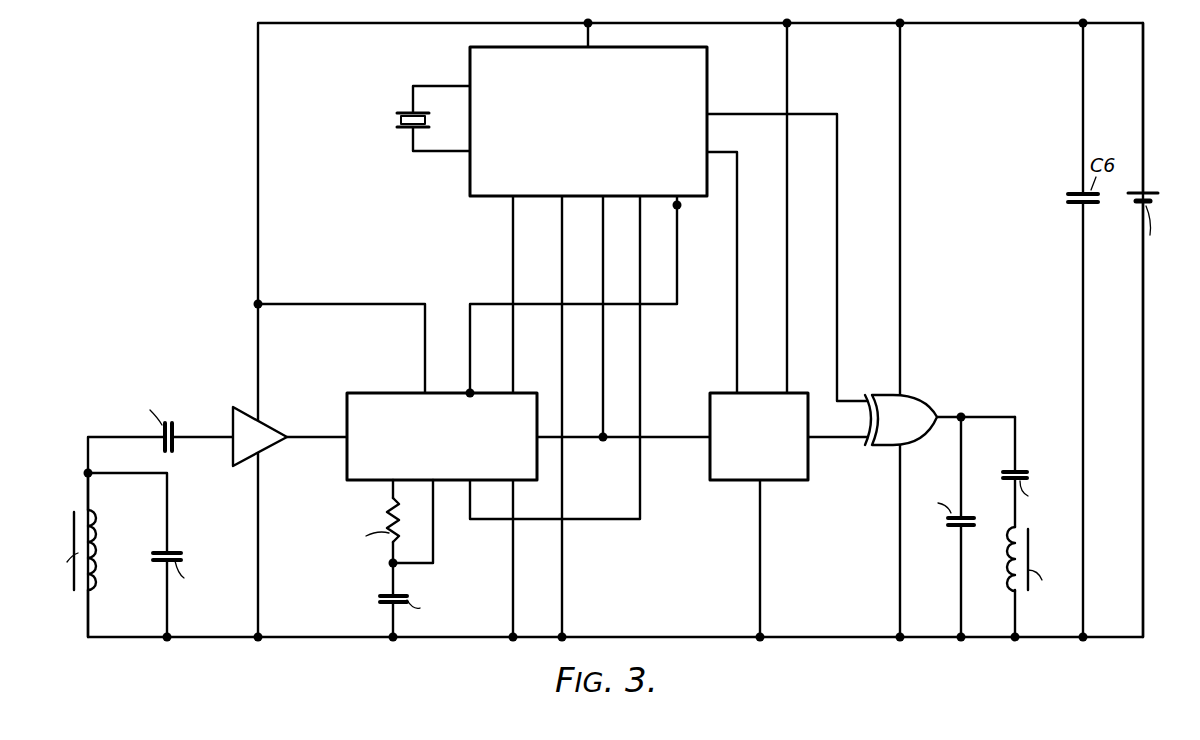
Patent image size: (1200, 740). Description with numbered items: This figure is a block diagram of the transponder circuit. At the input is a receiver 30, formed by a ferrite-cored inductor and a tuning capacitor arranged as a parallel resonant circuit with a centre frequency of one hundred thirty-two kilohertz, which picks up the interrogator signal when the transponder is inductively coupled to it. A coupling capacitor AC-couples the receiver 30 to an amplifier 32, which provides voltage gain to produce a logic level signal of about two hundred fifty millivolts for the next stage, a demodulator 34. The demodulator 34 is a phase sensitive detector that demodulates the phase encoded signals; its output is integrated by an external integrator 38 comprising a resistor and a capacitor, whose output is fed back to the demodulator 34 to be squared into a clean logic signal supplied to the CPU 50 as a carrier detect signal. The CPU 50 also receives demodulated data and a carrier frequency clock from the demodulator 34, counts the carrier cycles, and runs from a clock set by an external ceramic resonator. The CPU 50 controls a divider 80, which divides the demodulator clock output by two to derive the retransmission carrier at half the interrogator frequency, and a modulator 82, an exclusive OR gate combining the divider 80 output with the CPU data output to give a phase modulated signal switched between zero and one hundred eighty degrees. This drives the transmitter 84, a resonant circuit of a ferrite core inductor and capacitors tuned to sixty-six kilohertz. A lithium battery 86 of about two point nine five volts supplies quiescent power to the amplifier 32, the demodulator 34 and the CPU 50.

The receiver 30 is at (72, 510).
The amplifier 32 is at (249, 405).
The demodulator 34 is at (450, 386).
The external integrator 38 is at (381, 556).
The CPU 50 is at (463, 58).
The divider 80 is at (706, 483).
The modulator 82 is at (928, 395).
The transmitter 84 is at (1034, 430).
The battery 86 is at (1153, 180).